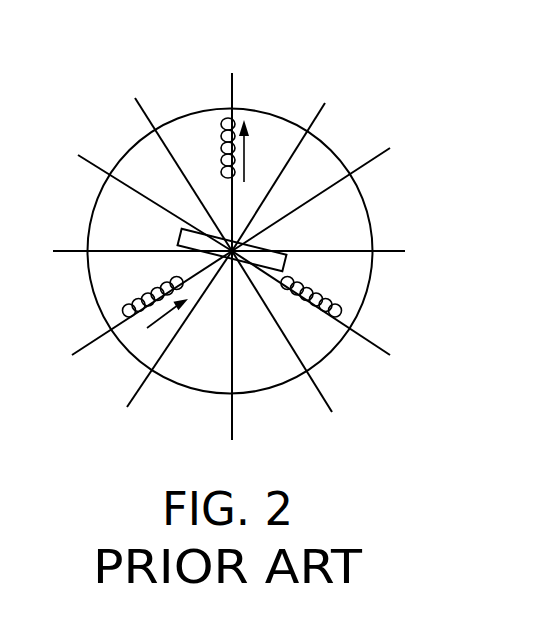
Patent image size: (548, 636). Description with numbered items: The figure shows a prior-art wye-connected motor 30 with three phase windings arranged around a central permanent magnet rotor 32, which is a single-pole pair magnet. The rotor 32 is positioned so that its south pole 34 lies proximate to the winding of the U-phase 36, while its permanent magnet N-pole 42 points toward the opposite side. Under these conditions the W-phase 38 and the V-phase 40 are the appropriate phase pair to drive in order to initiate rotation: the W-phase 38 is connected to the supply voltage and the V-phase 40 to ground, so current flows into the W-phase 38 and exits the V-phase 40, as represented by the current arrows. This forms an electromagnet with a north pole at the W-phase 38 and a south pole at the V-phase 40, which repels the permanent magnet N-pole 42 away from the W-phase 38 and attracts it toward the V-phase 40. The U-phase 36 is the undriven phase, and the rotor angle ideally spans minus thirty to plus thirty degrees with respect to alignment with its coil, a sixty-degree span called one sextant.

The wye-connected motor 30 is at (420, 86).
The permanent magnet rotor 32 is at (210, 233).
The south pole 34 is at (280, 252).
The U-phase 36 is at (358, 317).
The W-phase 38 is at (107, 332).
The V-phase 40 is at (232, 97).
The permanent magnet N-pole 42 is at (181, 224).